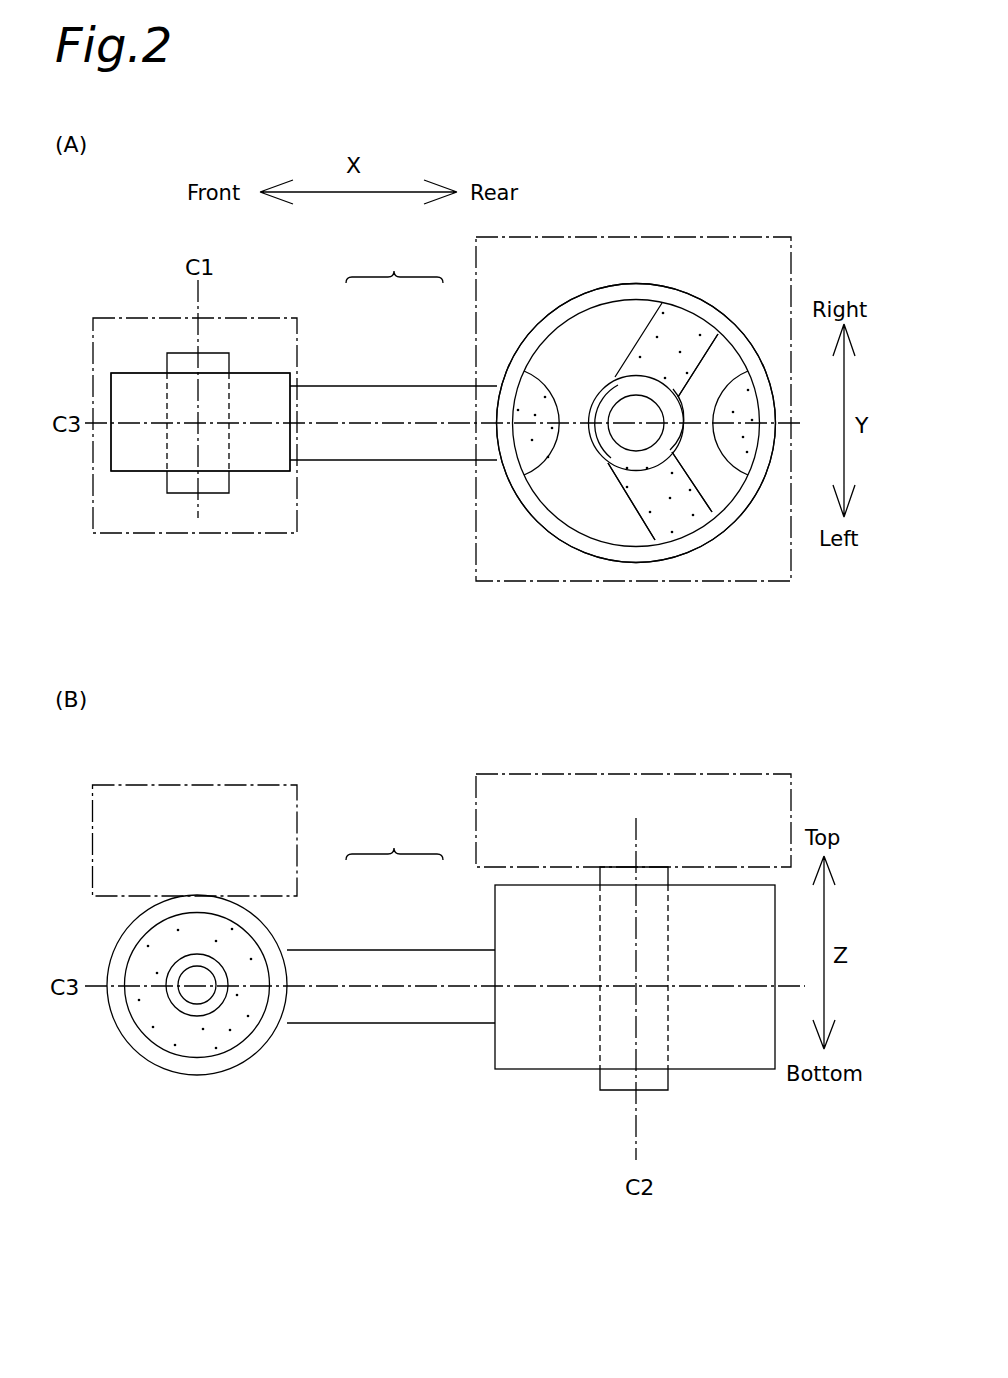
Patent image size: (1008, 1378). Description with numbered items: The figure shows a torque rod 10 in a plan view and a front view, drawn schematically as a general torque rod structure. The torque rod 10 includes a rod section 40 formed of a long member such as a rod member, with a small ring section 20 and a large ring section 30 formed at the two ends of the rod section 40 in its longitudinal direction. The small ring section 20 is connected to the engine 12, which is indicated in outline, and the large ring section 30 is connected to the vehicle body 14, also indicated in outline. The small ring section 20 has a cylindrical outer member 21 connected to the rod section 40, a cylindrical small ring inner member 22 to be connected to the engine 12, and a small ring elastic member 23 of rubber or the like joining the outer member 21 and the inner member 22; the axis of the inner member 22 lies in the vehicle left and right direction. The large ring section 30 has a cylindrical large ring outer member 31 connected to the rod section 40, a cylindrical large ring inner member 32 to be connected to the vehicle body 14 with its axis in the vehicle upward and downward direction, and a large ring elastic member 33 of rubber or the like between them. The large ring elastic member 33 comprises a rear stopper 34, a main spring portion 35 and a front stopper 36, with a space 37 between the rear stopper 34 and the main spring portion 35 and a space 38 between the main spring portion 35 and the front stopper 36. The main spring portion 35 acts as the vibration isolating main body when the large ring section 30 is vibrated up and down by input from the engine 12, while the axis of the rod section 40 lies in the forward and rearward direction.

The torque rod 10 is at (394, 552).
The engine 12 is at (129, 318).
The vehicle body 14 is at (722, 237).
The small ring section 20 is at (284, 343).
The cylindrical outer member 21 is at (259, 459).
The small ring inner member 22 is at (182, 487).
The small ring elastic member 23 is at (197, 1039).
The large ring section 30 is at (517, 328).
The large ring outer member 31 is at (698, 537).
The large ring inner member 32 is at (613, 393).
The large ring elastic member 33 is at (725, 331).
The rear stopper 34 is at (745, 407).
The main spring portion 35 is at (677, 325).
The front stopper 36 is at (538, 453).
The space 37 is at (718, 468).
The space 38 is at (578, 483).
The rod section 40 is at (387, 395).